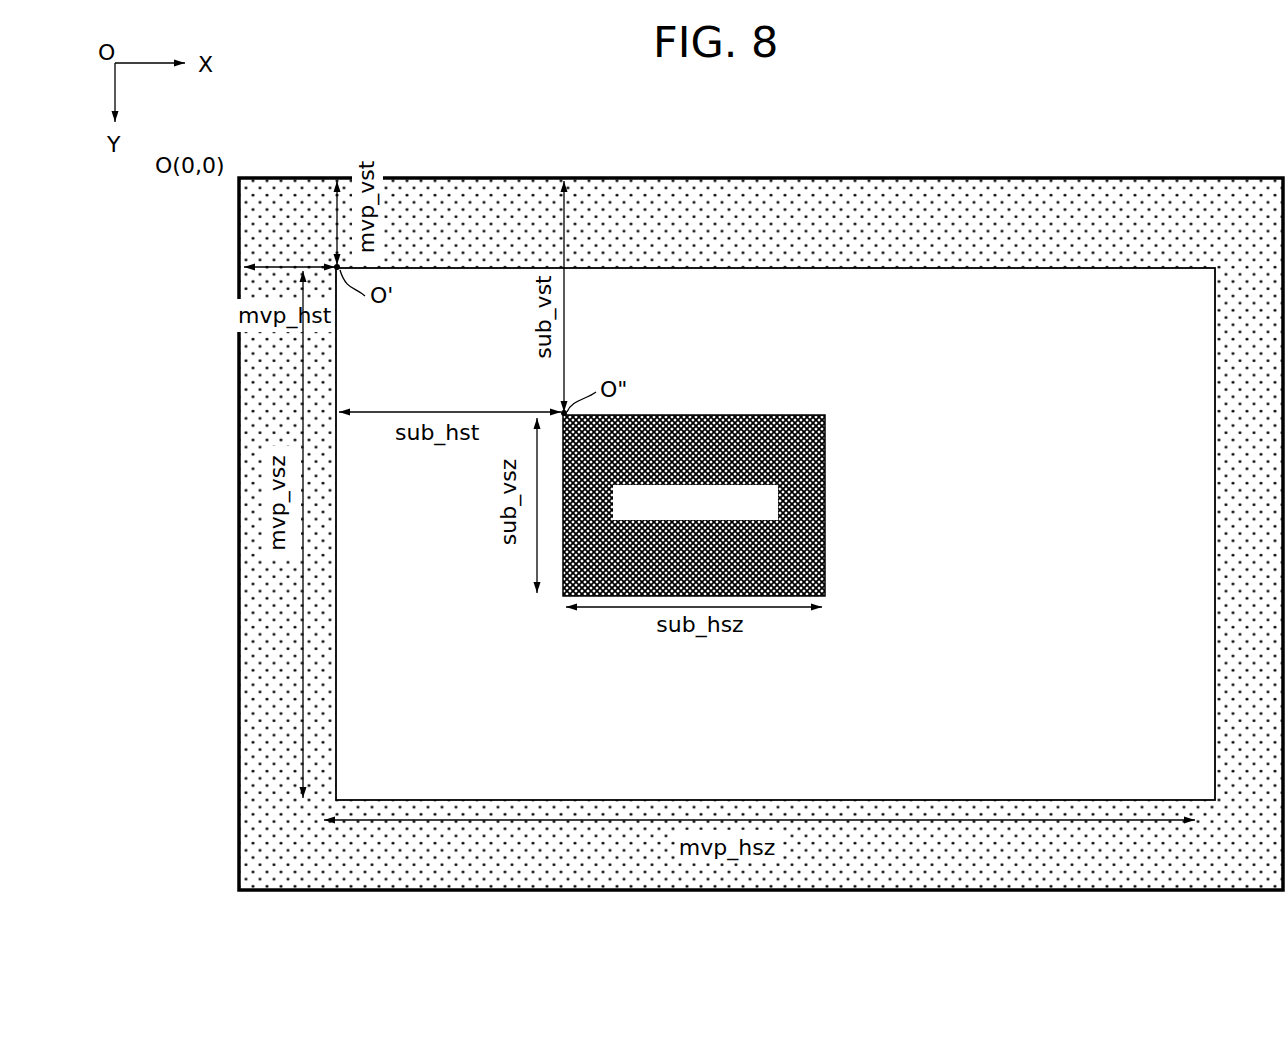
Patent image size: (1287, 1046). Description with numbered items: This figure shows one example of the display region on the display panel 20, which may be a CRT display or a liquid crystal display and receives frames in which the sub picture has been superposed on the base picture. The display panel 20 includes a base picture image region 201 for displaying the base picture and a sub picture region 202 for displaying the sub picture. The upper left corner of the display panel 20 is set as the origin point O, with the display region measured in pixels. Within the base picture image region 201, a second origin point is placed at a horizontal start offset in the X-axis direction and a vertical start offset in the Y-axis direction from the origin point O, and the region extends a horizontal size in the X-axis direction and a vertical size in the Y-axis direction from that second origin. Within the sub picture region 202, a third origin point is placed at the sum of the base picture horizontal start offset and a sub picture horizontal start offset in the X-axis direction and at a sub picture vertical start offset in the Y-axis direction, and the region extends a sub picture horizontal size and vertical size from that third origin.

The display panel 20 is at (758, 178).
The base picture image region 201 is at (830, 268).
The sub picture region 202 is at (826, 494).